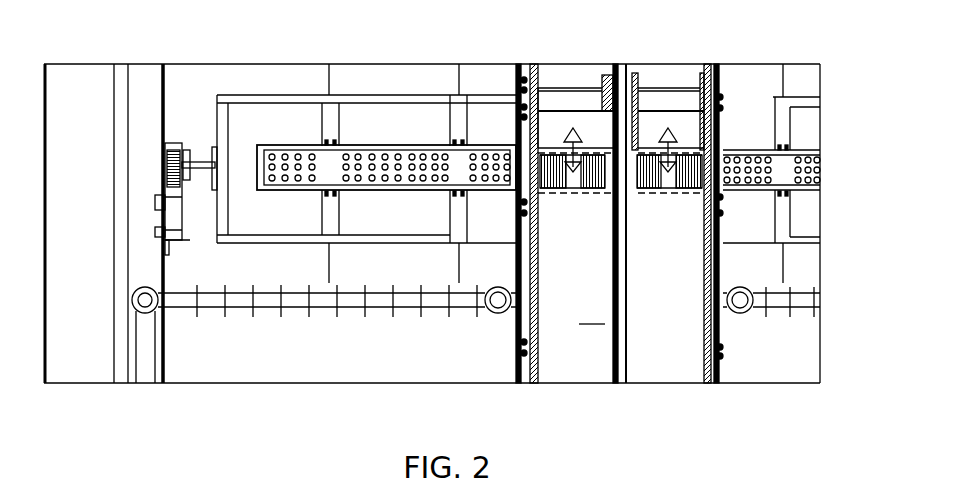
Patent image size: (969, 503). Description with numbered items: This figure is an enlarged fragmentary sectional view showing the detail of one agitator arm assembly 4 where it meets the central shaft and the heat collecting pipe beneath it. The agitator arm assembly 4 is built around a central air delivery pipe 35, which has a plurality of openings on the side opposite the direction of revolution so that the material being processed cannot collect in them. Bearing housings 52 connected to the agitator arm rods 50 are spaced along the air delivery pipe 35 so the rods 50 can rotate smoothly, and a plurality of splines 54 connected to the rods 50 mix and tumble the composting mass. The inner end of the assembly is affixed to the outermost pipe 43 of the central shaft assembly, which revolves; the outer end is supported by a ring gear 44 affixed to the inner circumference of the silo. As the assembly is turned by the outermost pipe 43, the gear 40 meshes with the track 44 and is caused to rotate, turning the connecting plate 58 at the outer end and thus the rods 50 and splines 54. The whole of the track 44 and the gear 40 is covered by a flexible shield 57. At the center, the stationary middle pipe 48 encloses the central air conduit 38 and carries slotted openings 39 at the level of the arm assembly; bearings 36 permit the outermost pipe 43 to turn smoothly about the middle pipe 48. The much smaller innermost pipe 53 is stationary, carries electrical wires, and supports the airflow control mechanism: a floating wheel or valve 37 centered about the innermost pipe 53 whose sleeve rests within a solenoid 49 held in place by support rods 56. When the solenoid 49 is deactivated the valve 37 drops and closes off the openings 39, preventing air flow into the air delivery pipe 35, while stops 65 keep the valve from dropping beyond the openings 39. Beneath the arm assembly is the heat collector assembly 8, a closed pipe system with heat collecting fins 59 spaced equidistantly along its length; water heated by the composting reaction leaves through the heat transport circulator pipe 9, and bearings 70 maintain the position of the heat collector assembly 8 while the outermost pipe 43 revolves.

The agitator arm assembly 4 is at (226, 90).
The heat collector assembly 8 is at (260, 308).
The heat transport circulator pipe 9 is at (146, 370).
The air delivery pipe 35 is at (381, 148).
The bearings 36 is at (531, 85).
The floating wheel or valve 37 is at (573, 102).
The central air conduit 38 is at (575, 206).
The slotted openings 39 is at (540, 198).
The gear 40 is at (173, 138).
The outermost pipe 43 is at (511, 62).
The ring gear 44 is at (165, 218).
The middle pipe 48 is at (703, 308).
The solenoid 49 is at (636, 72).
The agitator arm rods 50 is at (372, 228).
The bearing housings 52 is at (456, 108).
The innermost pipe 53 is at (626, 342).
The splines 54 is at (338, 261).
The support rods 56 is at (674, 76).
The flexible shield 57 is at (193, 248).
The connecting plate 58 is at (217, 152).
The heat collecting fins 59 is at (345, 320).
The stops 65 is at (696, 212).
The bearings 70 is at (734, 325).